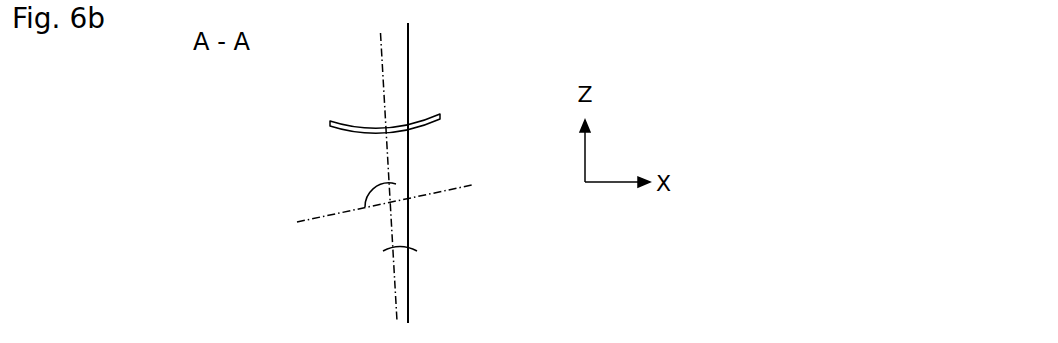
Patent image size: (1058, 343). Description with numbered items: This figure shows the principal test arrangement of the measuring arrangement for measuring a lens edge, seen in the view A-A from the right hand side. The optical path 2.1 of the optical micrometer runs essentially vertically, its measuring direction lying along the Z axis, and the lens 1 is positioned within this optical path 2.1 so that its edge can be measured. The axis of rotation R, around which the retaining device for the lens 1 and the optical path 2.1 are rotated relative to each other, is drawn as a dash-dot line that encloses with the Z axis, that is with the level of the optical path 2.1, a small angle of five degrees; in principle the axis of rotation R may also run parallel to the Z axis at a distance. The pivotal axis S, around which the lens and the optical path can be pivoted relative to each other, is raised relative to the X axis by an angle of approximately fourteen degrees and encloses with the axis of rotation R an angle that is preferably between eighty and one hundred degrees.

The optical path 2.1 is at (408, 40).
The curved element (blade / plate) 1 is at (440, 116).
The axis of rotation R is at (380, 57).
The pivotal axis S is at (297, 223).